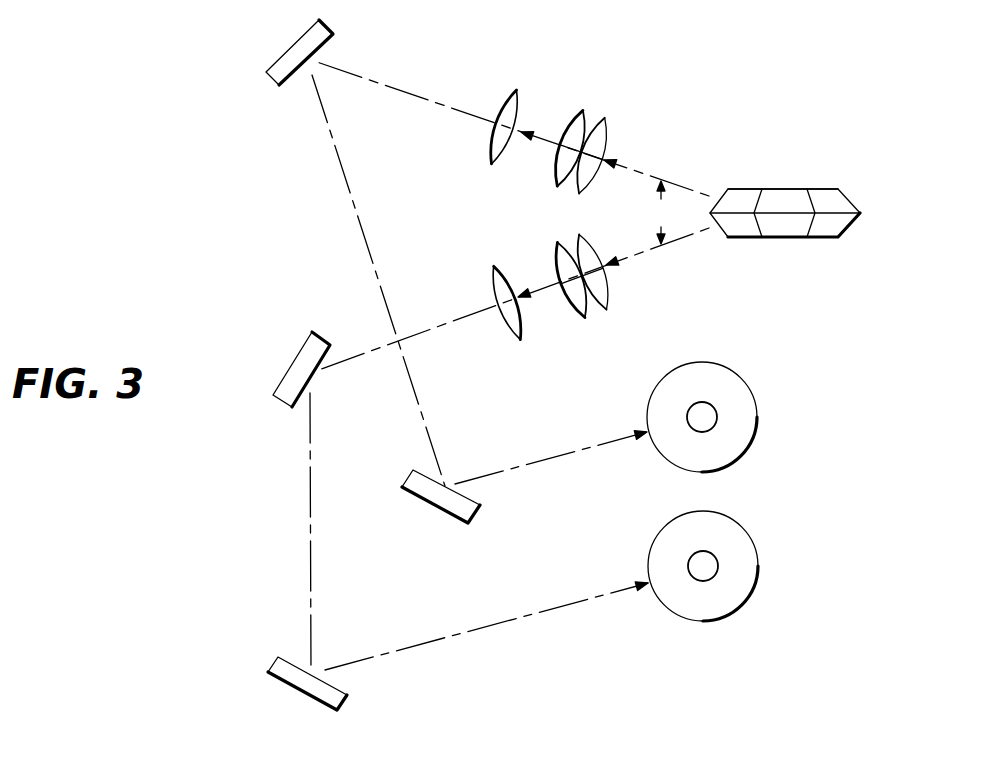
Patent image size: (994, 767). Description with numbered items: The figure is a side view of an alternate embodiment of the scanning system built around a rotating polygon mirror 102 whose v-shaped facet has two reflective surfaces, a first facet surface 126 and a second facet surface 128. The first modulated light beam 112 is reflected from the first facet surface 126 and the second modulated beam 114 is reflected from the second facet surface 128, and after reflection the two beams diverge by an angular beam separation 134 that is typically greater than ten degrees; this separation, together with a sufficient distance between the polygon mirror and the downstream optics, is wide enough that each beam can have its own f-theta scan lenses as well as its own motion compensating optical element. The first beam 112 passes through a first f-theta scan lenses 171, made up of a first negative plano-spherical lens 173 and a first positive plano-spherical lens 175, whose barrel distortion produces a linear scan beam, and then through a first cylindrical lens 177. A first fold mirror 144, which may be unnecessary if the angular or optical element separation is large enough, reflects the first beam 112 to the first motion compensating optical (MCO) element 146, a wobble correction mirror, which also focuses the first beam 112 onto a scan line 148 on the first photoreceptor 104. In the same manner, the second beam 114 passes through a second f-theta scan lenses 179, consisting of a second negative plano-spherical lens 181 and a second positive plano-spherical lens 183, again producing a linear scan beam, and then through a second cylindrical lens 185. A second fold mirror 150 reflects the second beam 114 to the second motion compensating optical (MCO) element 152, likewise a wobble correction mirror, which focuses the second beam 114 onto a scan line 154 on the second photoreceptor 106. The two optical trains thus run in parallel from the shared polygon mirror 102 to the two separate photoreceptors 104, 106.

The rotating polygon mirror 102 is at (881, 115).
The first photoreceptor 104 is at (743, 391).
The second photoreceptor 106 is at (743, 540).
The first modulated light beam 112 is at (673, 178).
The second modulated beam 114 is at (673, 246).
The first facet surface 126 is at (716, 194).
The second facet surface 128 is at (716, 228).
The angular beam separation 134 is at (659, 212).
The first fold mirror 144 is at (275, 61).
The first motion compensating optical (MCO) element 146 is at (456, 517).
The scan line 148 is at (645, 437).
The second fold mirror 150 is at (302, 343).
The second motion compensating optical (MCO) element 152 is at (318, 703).
The scan line 154 is at (645, 588).
The first f-theta scan lenses 171 is at (603, 130).
The first negative plano-spherical lens 173 is at (606, 130).
The first positive plano-spherical lens 175 is at (567, 130).
The first cylindrical lens 177 is at (501, 101).
The second f-theta scan lenses 179 is at (601, 290).
The second negative plano-spherical lens 181 is at (577, 322).
The second positive plano-spherical lens 183 is at (558, 256).
The second cylindrical lens 185 is at (493, 282).